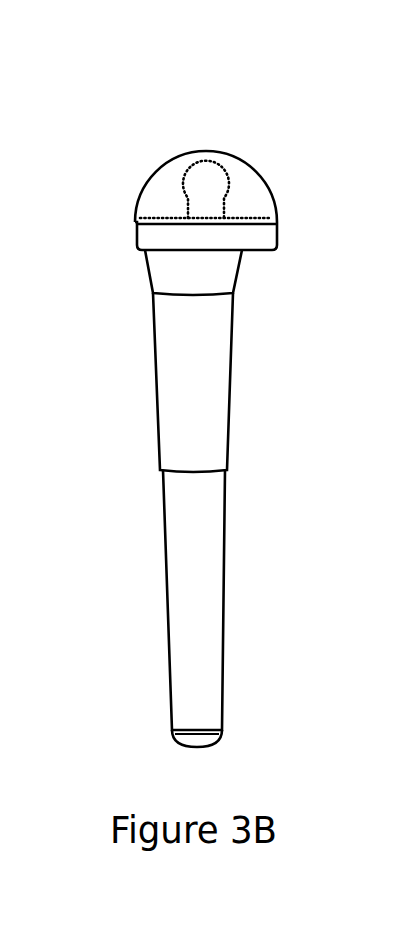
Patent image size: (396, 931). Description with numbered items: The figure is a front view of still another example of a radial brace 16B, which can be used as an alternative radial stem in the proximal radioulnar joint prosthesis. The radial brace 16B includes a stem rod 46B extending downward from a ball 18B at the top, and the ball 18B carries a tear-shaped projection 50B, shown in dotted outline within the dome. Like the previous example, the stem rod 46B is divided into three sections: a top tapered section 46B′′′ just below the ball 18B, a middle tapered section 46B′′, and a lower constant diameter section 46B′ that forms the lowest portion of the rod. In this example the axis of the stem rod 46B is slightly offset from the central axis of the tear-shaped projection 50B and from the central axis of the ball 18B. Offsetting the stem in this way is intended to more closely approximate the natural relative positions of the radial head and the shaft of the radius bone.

The radial brace 16B is at (95, 128).
The ball 18B is at (152, 191).
The tear-shaped projection 50B is at (207, 173).
The stem rod 46B is at (225, 427).
The top tapered section 46B′′′ is at (165, 277).
The middle tapered section 46B′′ is at (165, 382).
The lower constant diameter section 46B′ is at (177, 587).